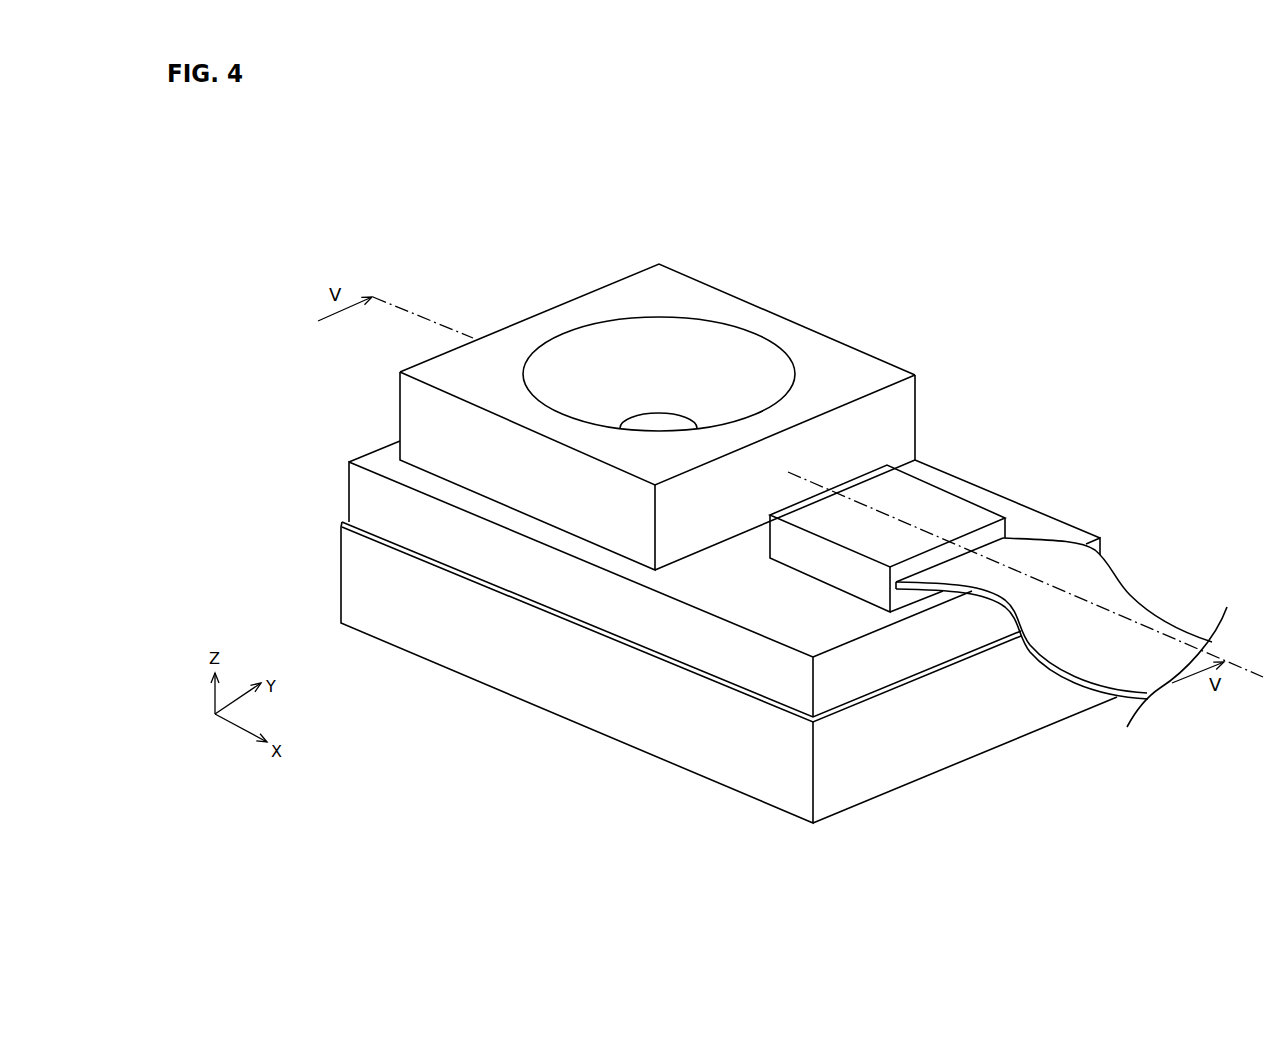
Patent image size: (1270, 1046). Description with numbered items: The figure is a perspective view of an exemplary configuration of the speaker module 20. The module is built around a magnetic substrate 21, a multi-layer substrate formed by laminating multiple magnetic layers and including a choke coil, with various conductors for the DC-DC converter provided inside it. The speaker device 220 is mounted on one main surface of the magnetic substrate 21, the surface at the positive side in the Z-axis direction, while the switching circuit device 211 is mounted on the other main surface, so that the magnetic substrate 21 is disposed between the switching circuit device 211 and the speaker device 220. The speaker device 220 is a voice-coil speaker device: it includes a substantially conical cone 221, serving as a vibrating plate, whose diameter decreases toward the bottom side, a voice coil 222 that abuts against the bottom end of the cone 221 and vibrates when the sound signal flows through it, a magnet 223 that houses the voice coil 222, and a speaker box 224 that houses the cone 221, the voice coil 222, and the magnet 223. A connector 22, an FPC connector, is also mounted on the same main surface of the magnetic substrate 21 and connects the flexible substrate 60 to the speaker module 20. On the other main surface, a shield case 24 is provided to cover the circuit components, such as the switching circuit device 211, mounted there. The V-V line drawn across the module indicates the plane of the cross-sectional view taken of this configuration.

The speaker module 20 is at (1151, 207).
The magnetic substrate 21 is at (359, 487).
The connector 22 is at (935, 505).
The shield case 24 is at (359, 589).
The flexible substrate 60 is at (1123, 604).
The switching circuit device 211 is at (549, 651).
The speaker device 220 is at (886, 287).
The cone 221 is at (650, 343).
The voice coil 222 is at (666, 409).
The magnet 223 is at (714, 421).
The speaker box 224 is at (868, 373).